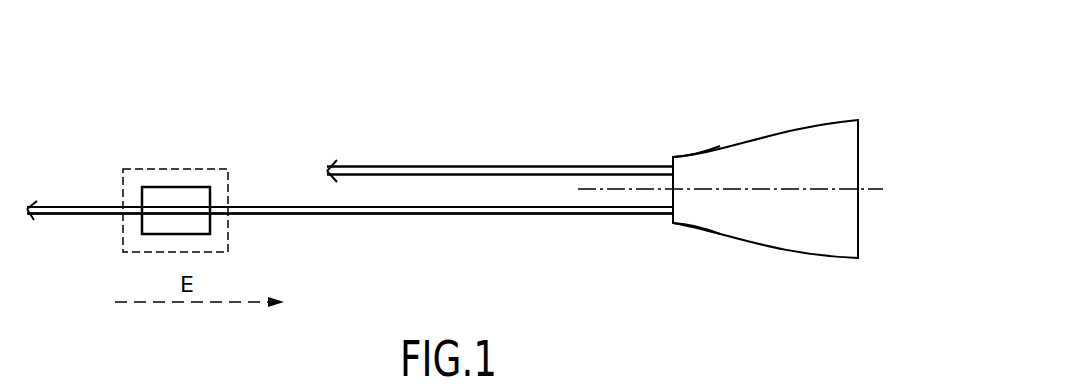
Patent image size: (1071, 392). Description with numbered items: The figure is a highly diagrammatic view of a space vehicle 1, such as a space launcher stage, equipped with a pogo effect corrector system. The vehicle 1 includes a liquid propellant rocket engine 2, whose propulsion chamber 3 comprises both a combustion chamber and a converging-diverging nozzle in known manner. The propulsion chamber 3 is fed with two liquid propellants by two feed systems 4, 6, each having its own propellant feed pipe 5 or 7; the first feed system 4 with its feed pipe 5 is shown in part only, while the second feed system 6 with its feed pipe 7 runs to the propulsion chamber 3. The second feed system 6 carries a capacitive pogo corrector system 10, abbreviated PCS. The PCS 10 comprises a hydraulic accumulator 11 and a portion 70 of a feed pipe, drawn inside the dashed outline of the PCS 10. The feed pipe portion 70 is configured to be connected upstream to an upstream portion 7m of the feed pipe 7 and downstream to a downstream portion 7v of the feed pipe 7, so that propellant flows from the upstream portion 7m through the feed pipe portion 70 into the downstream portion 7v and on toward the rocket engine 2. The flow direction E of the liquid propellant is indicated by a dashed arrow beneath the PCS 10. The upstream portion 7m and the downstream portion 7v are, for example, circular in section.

The space vehicle 1 is at (729, 97).
The liquid propellant rocket engine 2 is at (765, 155).
The propulsion chamber 3 is at (698, 172).
The first feed system 4 is at (500, 134).
The propellant feed pipe 5 is at (500, 152).
The second feed system 6 is at (350, 247).
The feed pipe 7 is at (350, 230).
The upstream portion of the feed pipe 7m is at (84, 188).
The downstream portion of the feed pipe 7v is at (441, 232).
The capacitive pogo corrector system 10 is at (175, 175).
The hydraulic accumulator 11 is at (177, 184).
The feed pipe portion 70 is at (147, 242).